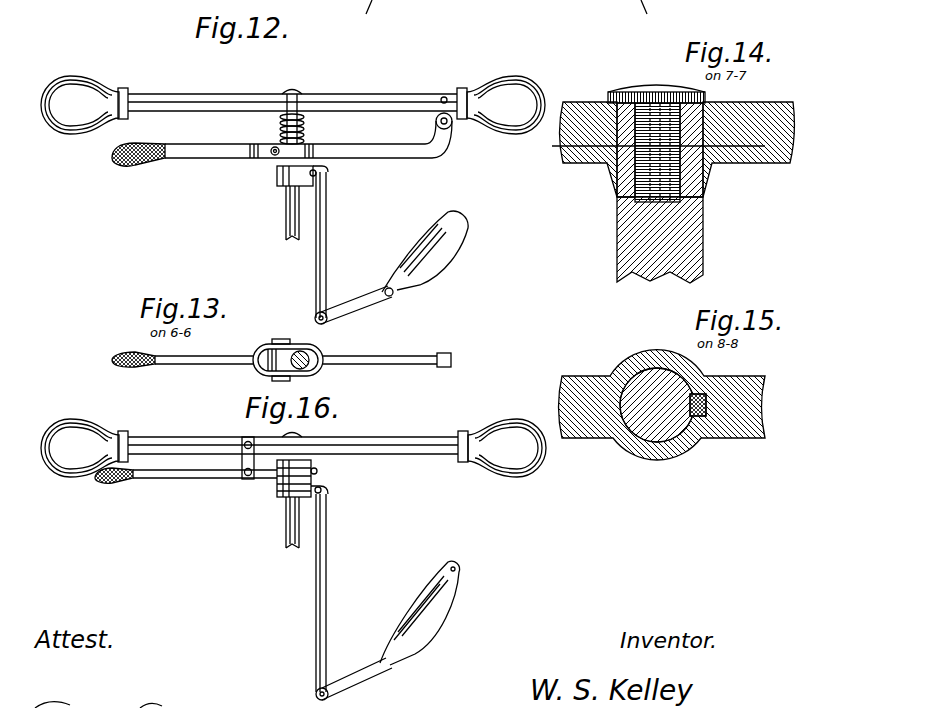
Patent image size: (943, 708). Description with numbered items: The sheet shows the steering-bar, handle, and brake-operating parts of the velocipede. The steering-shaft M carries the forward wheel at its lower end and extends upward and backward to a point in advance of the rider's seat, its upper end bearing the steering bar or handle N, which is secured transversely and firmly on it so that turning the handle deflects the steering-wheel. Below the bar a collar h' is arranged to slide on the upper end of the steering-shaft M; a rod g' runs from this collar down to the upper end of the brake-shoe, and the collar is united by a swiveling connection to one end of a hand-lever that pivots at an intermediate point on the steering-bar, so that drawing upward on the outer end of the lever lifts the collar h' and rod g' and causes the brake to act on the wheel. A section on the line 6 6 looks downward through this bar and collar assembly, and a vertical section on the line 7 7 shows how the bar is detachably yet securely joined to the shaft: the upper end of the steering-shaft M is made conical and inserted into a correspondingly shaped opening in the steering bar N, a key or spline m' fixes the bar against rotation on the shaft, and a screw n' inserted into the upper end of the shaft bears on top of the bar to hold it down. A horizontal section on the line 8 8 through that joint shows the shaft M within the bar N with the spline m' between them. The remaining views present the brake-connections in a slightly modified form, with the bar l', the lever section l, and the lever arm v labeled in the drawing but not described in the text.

In FIG. 12, the steering bar N is at (293, 104).
In FIG. 16, the steering bar N is at (293, 448).
In FIG. 14, the steering bar N is at (749, 112).
In FIG. 15, the steering bar N is at (662, 405).
In FIG. 12, the section line 7 7 is at (291, 91).
In FIG. 12, the section line 6 6 is at (280, 129).
In FIG. 12, the lower lever bar l' is at (282, 139).
In FIG. 16, the lower lever bar l' is at (186, 469).
In FIG. 13, the lever bar (section) l is at (281, 362).
In FIG. 12, the collar h' is at (285, 176).
In FIG. 16, the collar h' is at (285, 479).
In FIG. 12, the steering-shaft M is at (286, 229).
In FIG. 13, the steering-shaft M is at (300, 351).
In FIG. 16, the steering-shaft M is at (286, 521).
In FIG. 14, the steering-shaft M is at (630, 240).
In FIG. 15, the steering-shaft M is at (657, 405).
In FIG. 12, the rod g' is at (333, 248).
In FIG. 16, the rod g' is at (334, 597).
In FIG. 12, the paddle / vane v is at (394, 267).
In FIG. 16, the paddle / vane v is at (391, 630).
In FIG. 14, the screw n' is at (656, 136).
In FIG. 14, the section line 8 8 is at (653, 148).
In FIG. 14, the key or spline m' is at (684, 150).
In FIG. 15, the key or spline m' is at (720, 387).